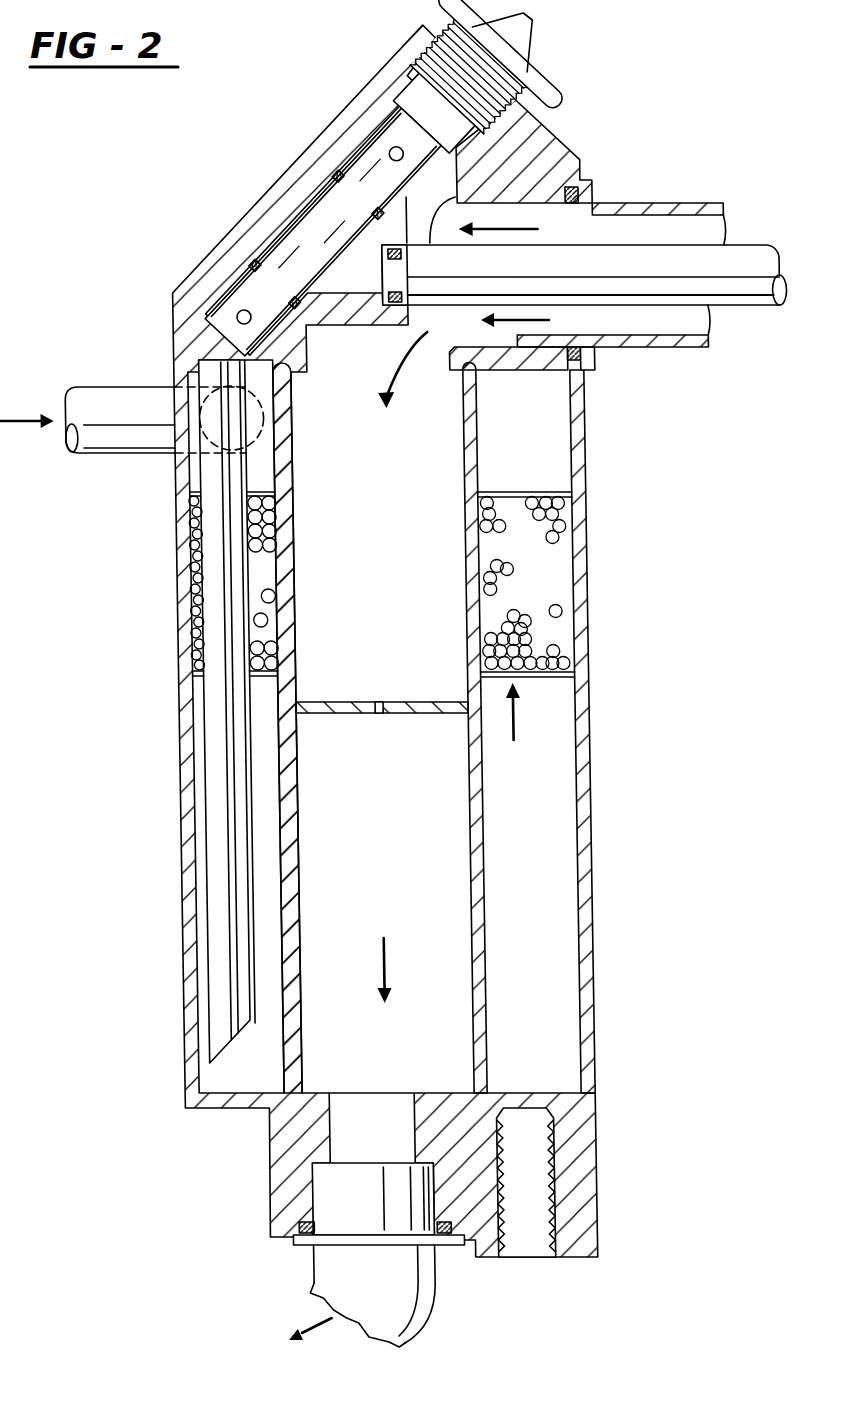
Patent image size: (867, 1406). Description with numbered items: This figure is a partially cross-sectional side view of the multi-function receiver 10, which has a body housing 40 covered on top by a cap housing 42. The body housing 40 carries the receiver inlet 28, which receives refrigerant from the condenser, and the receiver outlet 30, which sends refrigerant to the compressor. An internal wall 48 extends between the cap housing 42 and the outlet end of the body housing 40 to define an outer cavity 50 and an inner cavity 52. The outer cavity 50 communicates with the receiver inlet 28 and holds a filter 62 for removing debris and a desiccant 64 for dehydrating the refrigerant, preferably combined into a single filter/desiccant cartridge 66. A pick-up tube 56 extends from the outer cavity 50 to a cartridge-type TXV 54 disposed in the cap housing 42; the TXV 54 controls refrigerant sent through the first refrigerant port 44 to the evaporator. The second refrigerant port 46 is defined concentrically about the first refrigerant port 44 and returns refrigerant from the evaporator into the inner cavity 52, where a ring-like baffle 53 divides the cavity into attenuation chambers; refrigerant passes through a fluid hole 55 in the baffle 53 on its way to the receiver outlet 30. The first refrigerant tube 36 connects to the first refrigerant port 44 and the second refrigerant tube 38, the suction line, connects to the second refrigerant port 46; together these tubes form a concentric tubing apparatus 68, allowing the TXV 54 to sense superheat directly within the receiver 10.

The multi-function receiver 10 is at (116, 732).
The receiver inlet 28 is at (268, 430).
The receiver outlet 30 is at (300, 1160).
The first refrigerant tube 36 is at (768, 305).
The second refrigerant tube 38 is at (730, 202).
The body housing 40 is at (588, 711).
The cap housing 42 is at (245, 218).
The first refrigerant port 44 is at (458, 196).
The second refrigerant port 46 is at (517, 234).
The internal wall 48 is at (465, 612).
The outer cavity 50 is at (229, 1081).
The inner cavity 52 is at (363, 862).
The baffle 53 is at (335, 700).
The TXV 54 is at (580, 13).
The fluid hole 55 is at (390, 714).
The pick-up tube 56 is at (215, 812).
The filter 62 is at (193, 482).
The desiccant 64 is at (250, 636).
The filter/desiccant cartridge 66 is at (508, 740).
The concentric tubing apparatus 68 is at (756, 212).